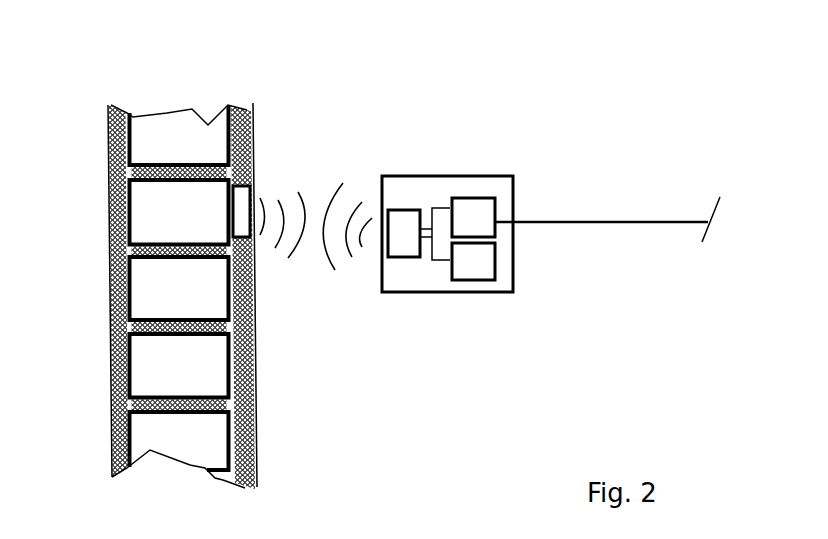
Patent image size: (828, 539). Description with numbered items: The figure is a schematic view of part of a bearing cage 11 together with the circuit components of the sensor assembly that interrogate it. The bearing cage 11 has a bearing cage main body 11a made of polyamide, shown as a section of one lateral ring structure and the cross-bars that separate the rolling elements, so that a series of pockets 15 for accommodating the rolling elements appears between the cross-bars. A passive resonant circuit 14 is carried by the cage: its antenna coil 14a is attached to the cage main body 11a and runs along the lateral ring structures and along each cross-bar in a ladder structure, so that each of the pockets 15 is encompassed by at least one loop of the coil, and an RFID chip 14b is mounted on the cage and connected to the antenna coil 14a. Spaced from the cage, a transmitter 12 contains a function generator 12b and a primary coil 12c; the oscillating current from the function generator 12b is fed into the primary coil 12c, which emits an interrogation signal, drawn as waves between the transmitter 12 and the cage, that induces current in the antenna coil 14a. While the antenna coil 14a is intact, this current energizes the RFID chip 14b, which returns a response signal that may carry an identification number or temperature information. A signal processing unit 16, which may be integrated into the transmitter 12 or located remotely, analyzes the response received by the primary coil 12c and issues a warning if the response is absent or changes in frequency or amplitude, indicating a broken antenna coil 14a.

The bearing cage 11 is at (205, 88).
The bearing cage main body 11a is at (252, 452).
The passive resonant circuit 14 is at (268, 152).
The antenna coil 14a is at (252, 392).
The RFID chip 14b is at (240, 200).
The pockets 15 is at (172, 293).
The transmitter 12 is at (445, 198).
The function generator 12b is at (467, 265).
The primary coil 12c is at (405, 240).
The signal processing unit 16 is at (480, 218).